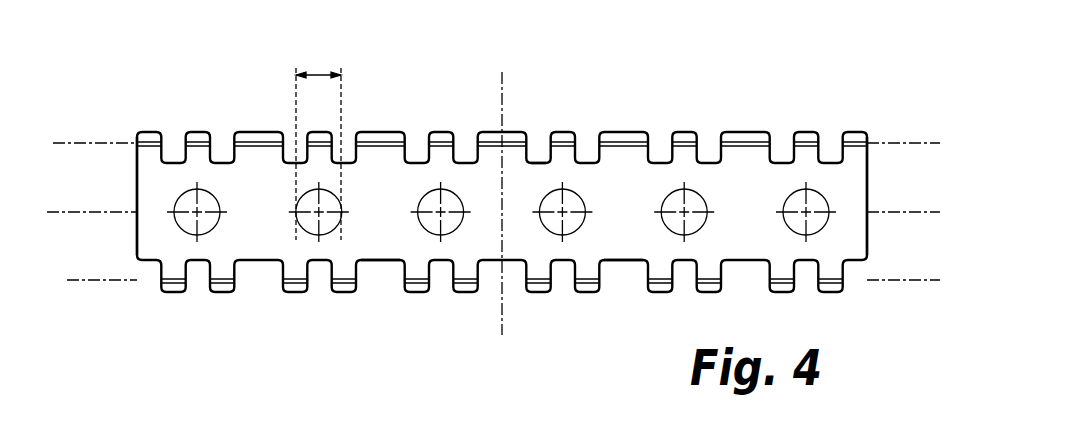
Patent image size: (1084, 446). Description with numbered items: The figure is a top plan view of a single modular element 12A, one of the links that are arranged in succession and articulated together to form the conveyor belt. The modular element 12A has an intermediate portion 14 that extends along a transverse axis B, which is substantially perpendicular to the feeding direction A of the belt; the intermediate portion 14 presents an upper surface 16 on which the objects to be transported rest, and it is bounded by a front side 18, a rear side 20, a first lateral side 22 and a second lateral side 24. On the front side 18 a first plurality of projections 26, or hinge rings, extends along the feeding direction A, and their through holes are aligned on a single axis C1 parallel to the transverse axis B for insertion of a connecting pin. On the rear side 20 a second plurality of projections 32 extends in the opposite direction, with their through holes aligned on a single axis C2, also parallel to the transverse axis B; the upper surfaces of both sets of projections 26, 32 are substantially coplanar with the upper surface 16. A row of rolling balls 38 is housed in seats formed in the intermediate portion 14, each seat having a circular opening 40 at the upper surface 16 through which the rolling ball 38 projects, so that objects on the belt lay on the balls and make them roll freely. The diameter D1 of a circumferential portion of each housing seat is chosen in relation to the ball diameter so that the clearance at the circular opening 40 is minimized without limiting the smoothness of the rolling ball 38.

The modular element 12A is at (878, 113).
The upper surface 16 is at (618, 202).
The first plurality of projections 26 is at (253, 132).
The second plurality of projections 32 is at (290, 293).
The front side 18 is at (540, 162).
The intermediate portion 14 is at (380, 261).
The rear side 20 is at (625, 262).
The second lateral side 24 is at (137, 178).
The first lateral side 22 is at (867, 177).
The rolling ball 38 is at (813, 200).
The circular opening 40 is at (792, 195).
The diameter of the circumferential portion of the housing seat D1 is at (320, 74).
The axis of the first through holes C1 is at (932, 143).
The axis of the second through holes C2 is at (932, 283).
The feeding direction A is at (502, 335).
The transverse axis B is at (95, 213).